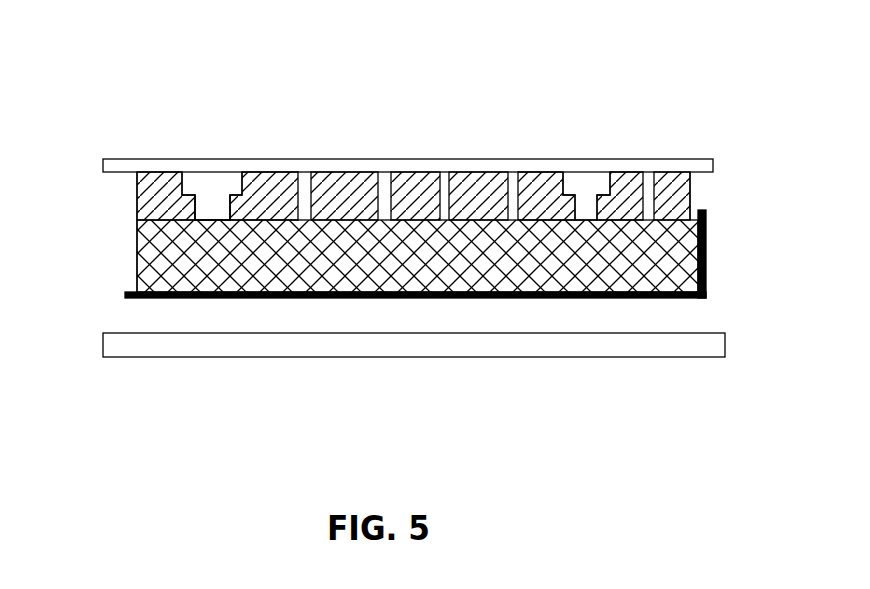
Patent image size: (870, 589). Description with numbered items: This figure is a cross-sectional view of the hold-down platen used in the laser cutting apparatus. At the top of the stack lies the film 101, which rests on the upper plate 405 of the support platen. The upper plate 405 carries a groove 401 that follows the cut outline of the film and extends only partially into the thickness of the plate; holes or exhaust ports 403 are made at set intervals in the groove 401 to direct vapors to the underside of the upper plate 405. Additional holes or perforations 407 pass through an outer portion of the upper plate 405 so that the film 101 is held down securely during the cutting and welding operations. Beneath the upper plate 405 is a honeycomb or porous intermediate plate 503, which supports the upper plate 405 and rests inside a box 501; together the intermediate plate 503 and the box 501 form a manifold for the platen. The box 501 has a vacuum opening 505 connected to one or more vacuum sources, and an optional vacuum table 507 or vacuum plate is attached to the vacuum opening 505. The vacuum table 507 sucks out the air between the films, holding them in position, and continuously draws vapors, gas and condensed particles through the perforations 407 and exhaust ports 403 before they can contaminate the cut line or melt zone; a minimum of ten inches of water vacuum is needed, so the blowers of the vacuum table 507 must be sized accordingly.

The film 101 is at (138, 158).
The groove 401 is at (229, 183).
The exhaust port 403 is at (218, 210).
The upper plate 405 is at (692, 193).
The perforation 407 is at (284, 214).
The box 501 is at (705, 270).
The intermediate plate 503 is at (167, 262).
The vacuum opening 505 is at (137, 268).
The vacuum table 507 is at (160, 357).